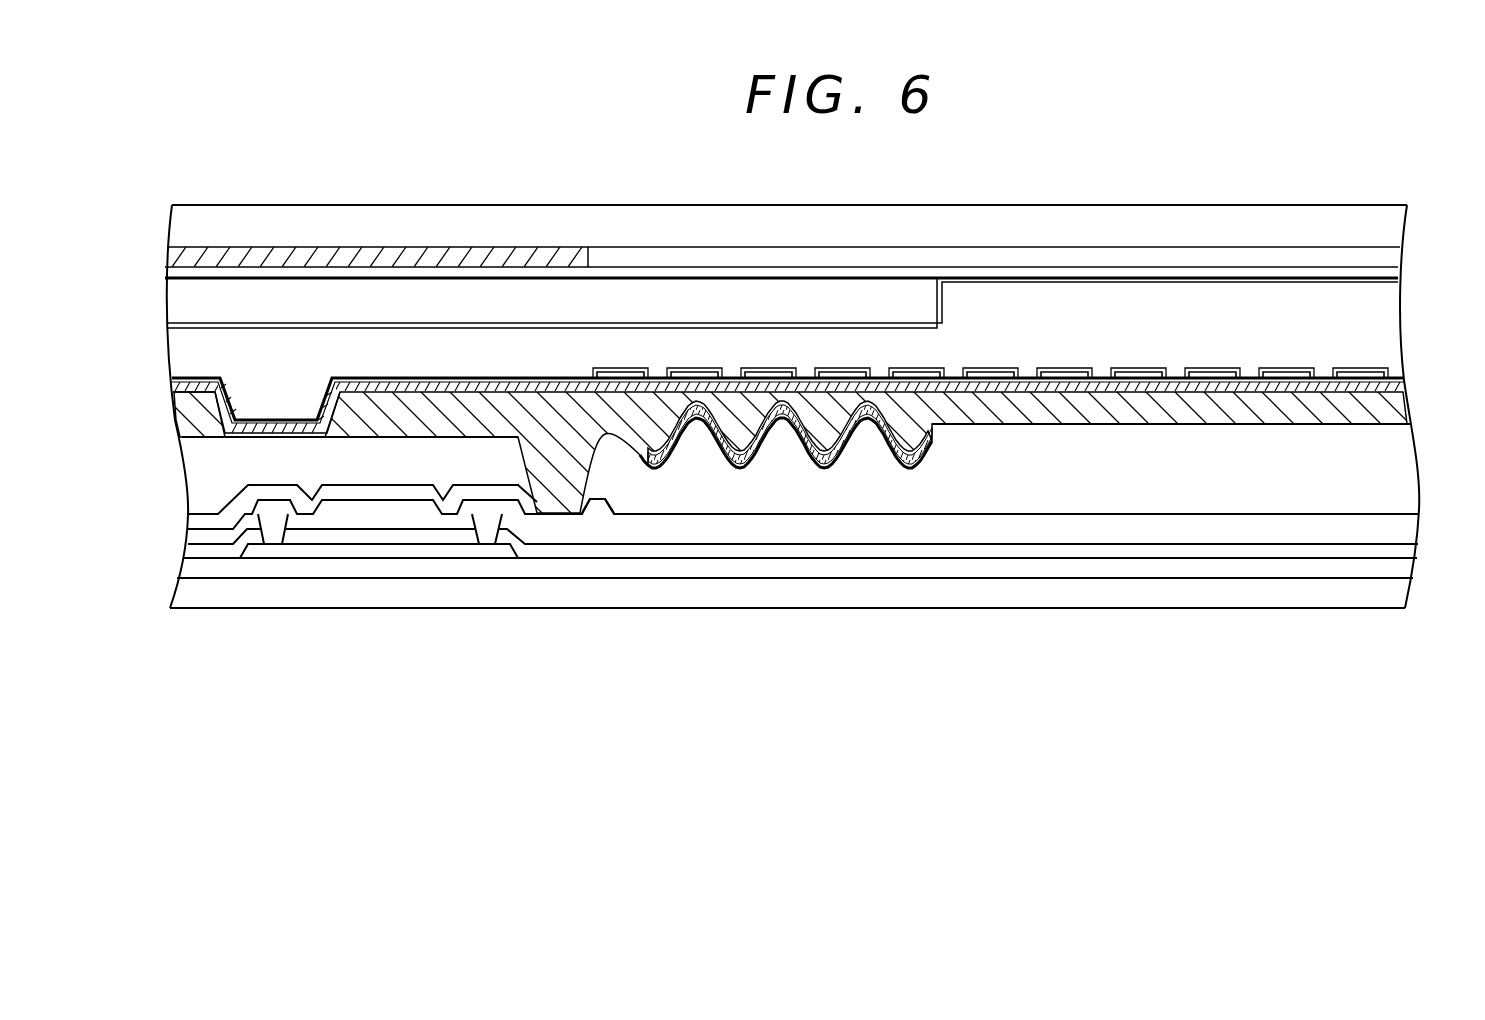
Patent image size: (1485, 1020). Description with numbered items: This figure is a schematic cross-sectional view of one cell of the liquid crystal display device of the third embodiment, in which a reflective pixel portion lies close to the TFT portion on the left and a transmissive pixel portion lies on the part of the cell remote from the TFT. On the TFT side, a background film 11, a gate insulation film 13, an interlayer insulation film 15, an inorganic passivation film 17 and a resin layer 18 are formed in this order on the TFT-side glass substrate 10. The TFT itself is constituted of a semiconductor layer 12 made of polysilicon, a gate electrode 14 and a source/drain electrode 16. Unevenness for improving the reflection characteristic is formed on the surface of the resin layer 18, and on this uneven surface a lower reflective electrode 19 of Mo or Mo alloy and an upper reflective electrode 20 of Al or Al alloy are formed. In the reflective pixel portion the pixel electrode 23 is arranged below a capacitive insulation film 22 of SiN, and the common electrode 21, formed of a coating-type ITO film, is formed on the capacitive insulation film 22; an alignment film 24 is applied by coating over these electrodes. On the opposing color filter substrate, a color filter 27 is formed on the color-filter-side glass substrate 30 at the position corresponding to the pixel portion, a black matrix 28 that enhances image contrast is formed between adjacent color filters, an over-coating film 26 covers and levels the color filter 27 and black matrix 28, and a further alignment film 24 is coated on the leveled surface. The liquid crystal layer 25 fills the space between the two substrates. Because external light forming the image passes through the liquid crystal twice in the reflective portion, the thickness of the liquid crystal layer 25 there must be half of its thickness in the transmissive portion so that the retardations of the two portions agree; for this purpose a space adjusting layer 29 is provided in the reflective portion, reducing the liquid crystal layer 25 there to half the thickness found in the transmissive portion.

The TFT-side glass substrate 10 is at (185, 605).
The background film 11 is at (188, 579).
The semiconductor layer 12 is at (325, 556).
The gate insulation film 13 is at (192, 555).
The gate electrode 14 is at (395, 524).
The interlayer insulation film 15 is at (192, 531).
The source/drain electrode 16 is at (555, 520).
The inorganic passivation film 17 is at (192, 504).
The resin layer 18 is at (197, 478).
The lower reflective electrode 19 is at (740, 469).
The upper reflective electrode 20 is at (822, 468).
The common electrode 21 is at (1138, 368).
The capacitive insulation film 22 is at (180, 390).
The pixel electrode 23 is at (195, 418).
The alignment film 24 is at (190, 332).
The liquid crystal layer 25 is at (185, 365).
The over-coating film 26 is at (180, 277).
The color filter 27 is at (1388, 249).
The black matrix 28 is at (180, 258).
The space adjusting layer 29 is at (185, 306).
The color-filter-side glass substrate 30 is at (185, 230).